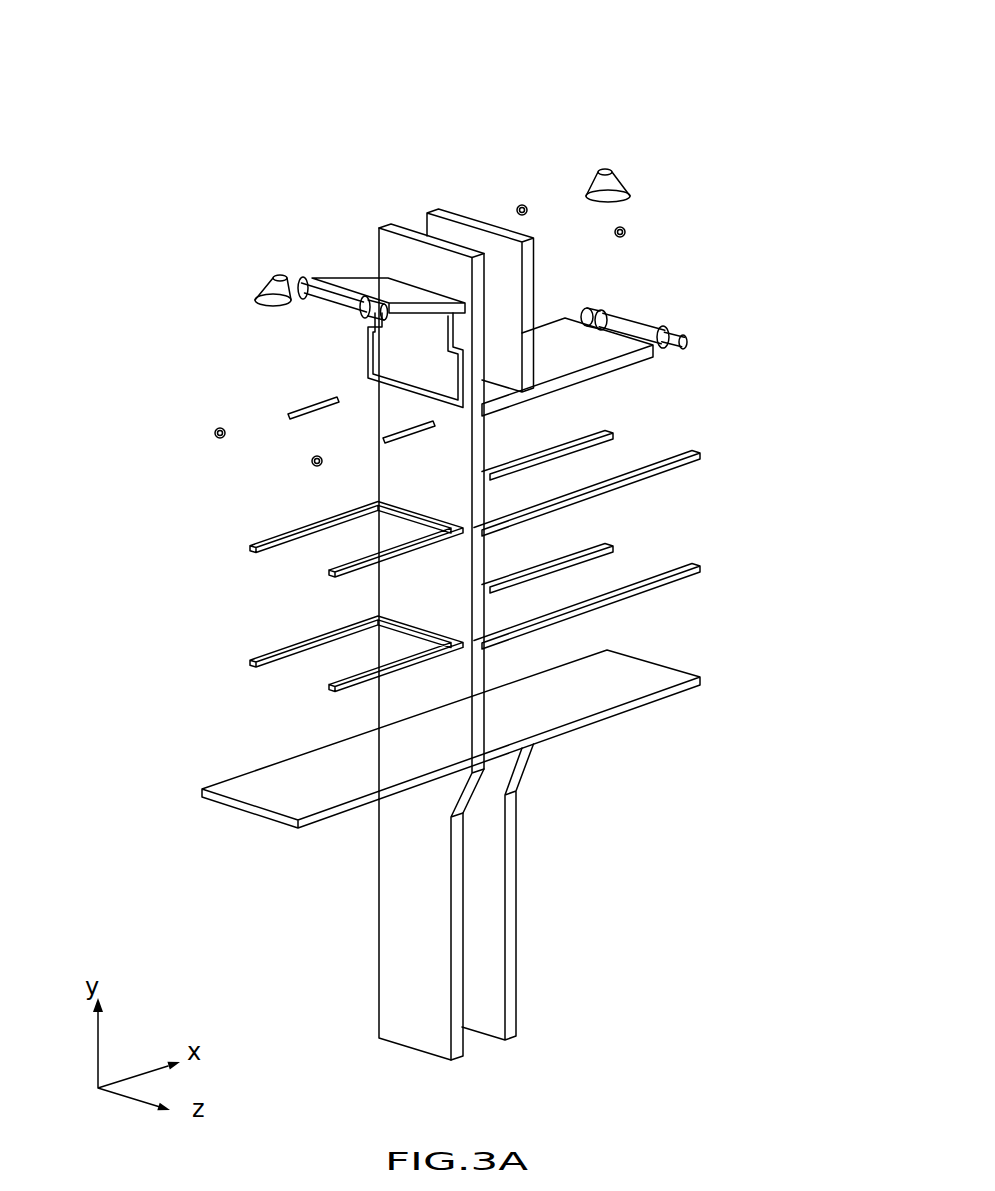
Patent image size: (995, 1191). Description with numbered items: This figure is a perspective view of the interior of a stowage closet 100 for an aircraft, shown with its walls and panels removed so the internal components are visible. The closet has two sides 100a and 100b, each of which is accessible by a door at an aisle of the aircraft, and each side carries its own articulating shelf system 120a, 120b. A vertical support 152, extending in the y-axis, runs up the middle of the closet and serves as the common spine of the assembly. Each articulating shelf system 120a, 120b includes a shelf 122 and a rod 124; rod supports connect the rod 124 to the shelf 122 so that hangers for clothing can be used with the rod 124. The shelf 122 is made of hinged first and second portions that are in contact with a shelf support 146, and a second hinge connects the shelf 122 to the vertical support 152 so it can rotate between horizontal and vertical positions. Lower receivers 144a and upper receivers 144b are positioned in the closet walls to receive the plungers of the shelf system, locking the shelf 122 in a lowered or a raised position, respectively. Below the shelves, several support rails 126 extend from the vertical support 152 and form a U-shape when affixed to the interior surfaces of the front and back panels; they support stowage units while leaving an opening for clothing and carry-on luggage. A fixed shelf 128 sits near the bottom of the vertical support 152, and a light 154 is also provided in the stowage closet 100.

The stowage closet 100 is at (296, 61).
The side 100a is at (739, 127).
The side 100b is at (163, 124).
The articulating shelf system 120a is at (689, 260).
The articulating shelf system 120b is at (205, 241).
The shelf 122 is at (375, 270).
The rod 124 is at (330, 287).
The support rails 126 is at (252, 666).
The fixed shelf 128 is at (605, 718).
The lower receivers 144a is at (306, 462).
The upper receivers 144b is at (522, 205).
The shelf support 146 is at (300, 411).
The vertical support 152 is at (450, 215).
The light 154 is at (610, 168).